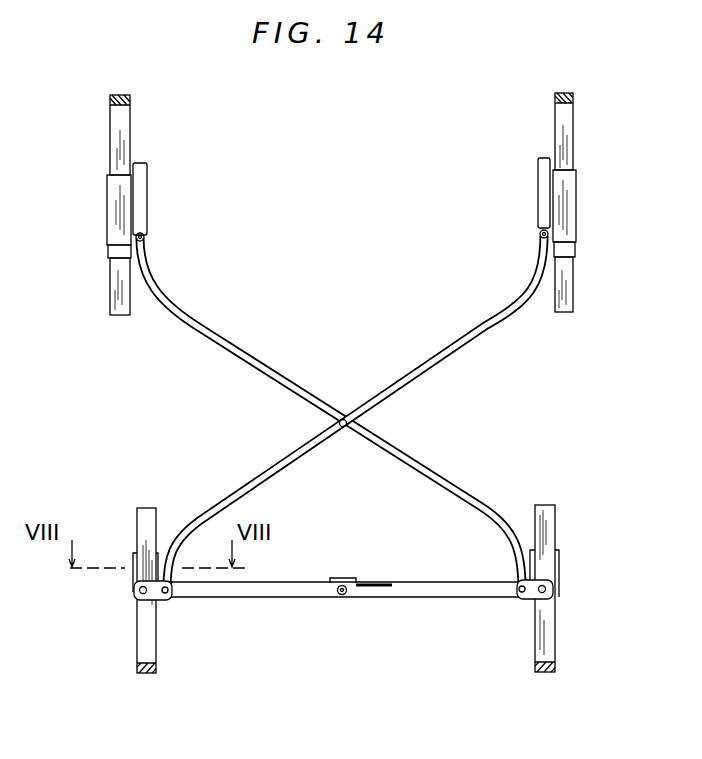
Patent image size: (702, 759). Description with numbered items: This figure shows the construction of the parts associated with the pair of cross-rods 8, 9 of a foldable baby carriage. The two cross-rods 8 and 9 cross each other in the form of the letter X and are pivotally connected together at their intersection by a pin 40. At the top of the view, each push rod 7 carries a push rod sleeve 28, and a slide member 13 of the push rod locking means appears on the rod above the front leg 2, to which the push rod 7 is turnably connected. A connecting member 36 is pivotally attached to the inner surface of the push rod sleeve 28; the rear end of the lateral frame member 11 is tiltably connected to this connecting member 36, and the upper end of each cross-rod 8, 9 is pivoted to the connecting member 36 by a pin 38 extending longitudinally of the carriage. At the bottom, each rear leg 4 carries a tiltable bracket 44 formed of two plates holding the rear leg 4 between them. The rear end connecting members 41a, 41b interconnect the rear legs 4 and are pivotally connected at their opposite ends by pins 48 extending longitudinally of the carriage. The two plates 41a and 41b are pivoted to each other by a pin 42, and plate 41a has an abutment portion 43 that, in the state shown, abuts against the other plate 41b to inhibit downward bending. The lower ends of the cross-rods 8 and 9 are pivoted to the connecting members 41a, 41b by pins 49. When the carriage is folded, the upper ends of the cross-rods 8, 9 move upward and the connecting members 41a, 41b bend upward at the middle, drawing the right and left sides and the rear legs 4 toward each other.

The front leg 2 is at (110, 278).
The rear leg 4 is at (140, 528).
The push rod 7 is at (118, 116).
The cross-rod 8 is at (200, 325).
The cross-rod 9 is at (402, 382).
The lateral frame member 11 is at (140, 177).
The slide member 13 is at (115, 255).
The push rod sleeve 28 is at (113, 187).
The connecting member 36 is at (145, 233).
The pin 38 is at (145, 237).
The pin 40 is at (342, 420).
The rear end connecting member 41a is at (282, 590).
The rear end connecting member 41b is at (428, 590).
The pin 42 is at (341, 596).
The abutment portion 43 is at (335, 578).
The tiltable bracket 44 is at (132, 575).
The pin 48 is at (136, 598).
The pin 49 is at (180, 600).